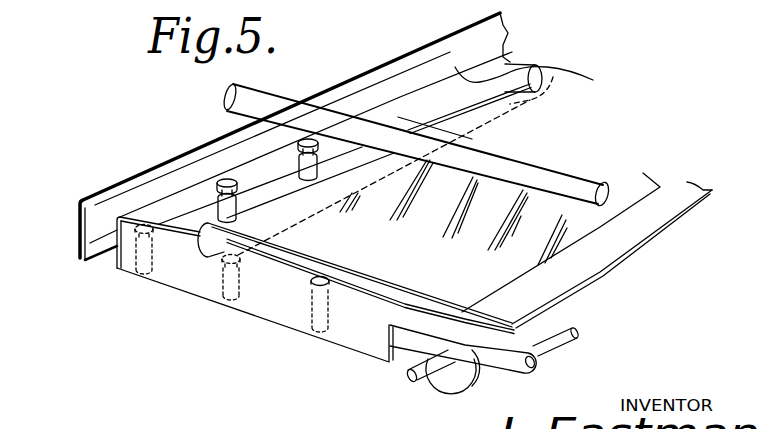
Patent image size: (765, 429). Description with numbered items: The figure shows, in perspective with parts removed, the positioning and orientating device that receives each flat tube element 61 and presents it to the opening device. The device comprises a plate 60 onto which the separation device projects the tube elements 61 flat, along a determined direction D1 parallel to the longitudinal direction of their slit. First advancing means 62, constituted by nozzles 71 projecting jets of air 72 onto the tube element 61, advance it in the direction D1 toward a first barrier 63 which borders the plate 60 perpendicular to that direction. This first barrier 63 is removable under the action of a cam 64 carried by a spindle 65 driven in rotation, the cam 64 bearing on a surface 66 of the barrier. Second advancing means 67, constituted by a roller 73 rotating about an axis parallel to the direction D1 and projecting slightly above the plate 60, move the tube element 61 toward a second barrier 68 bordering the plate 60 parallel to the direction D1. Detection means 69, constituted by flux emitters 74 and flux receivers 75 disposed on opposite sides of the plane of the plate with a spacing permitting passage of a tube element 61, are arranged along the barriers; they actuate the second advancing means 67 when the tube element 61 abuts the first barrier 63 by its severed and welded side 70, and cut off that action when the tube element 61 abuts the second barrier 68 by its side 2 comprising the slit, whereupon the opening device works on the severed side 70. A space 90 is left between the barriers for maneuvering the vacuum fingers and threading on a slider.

The side comprising the slit 2 is at (188, 197).
The plate 60 is at (600, 252).
The tube element 61 is at (511, 72).
The first advancing means 62 is at (509, 156).
The first barrier 63 is at (268, 304).
The cam 64 is at (462, 382).
The spindle 65 is at (432, 384).
The surface of the barrier 66 is at (520, 373).
The second advancing means 67 is at (552, 66).
The second barrier 68 is at (137, 190).
The detection means 69 is at (246, 164).
The severed and welded side 70 is at (112, 253).
The nozzles 71 is at (528, 181).
The jets of air 72 is at (503, 235).
The roller 73 is at (414, 130).
The flux emitters 74 is at (230, 300).
The flux receivers 75 is at (226, 256).
The space 90 is at (95, 222).
The determined direction D1 is at (582, 137).